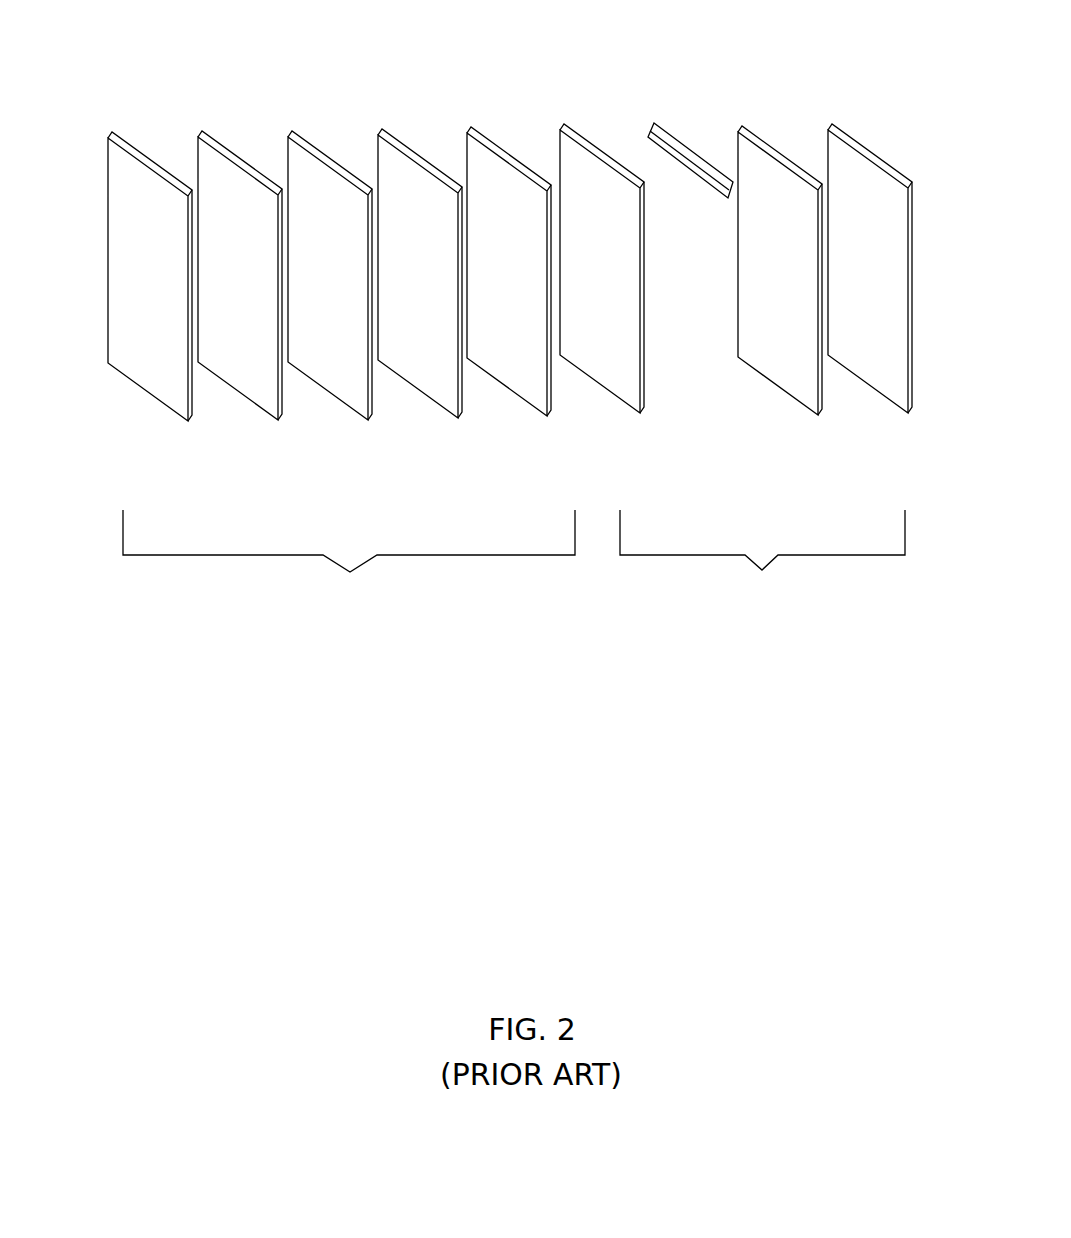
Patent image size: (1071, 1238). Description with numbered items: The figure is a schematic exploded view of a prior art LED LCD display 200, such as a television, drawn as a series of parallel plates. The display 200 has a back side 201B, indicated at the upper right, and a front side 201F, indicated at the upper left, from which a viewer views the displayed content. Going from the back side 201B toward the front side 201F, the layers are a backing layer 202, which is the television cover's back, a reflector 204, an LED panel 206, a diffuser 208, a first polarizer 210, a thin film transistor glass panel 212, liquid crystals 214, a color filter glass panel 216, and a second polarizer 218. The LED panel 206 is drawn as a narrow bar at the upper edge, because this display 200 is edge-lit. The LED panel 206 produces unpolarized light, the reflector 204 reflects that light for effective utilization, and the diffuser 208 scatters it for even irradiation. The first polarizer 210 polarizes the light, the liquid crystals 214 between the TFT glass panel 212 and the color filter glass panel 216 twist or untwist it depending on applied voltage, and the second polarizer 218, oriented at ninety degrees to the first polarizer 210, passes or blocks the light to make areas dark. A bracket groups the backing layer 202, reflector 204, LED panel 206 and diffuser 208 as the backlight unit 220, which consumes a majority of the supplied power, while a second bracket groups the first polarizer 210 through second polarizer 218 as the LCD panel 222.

The LCD display 200 is at (627, 35).
The front side 201F is at (68, 151).
The back side 201B is at (886, 80).
The backing layer 202 is at (874, 411).
The reflector 204 is at (793, 415).
The LED panel 206 is at (683, 182).
The diffuser 208 is at (603, 406).
The first polarizer 210 is at (498, 404).
The thin film transistor (TFT) glass panel 212 is at (417, 407).
The liquid crystals 214 is at (324, 414).
The color filter glass panel 216 is at (242, 422).
The second polarizer 218 is at (153, 422).
The backlight unit 220 is at (762, 555).
The LCD panel 222 is at (349, 558).